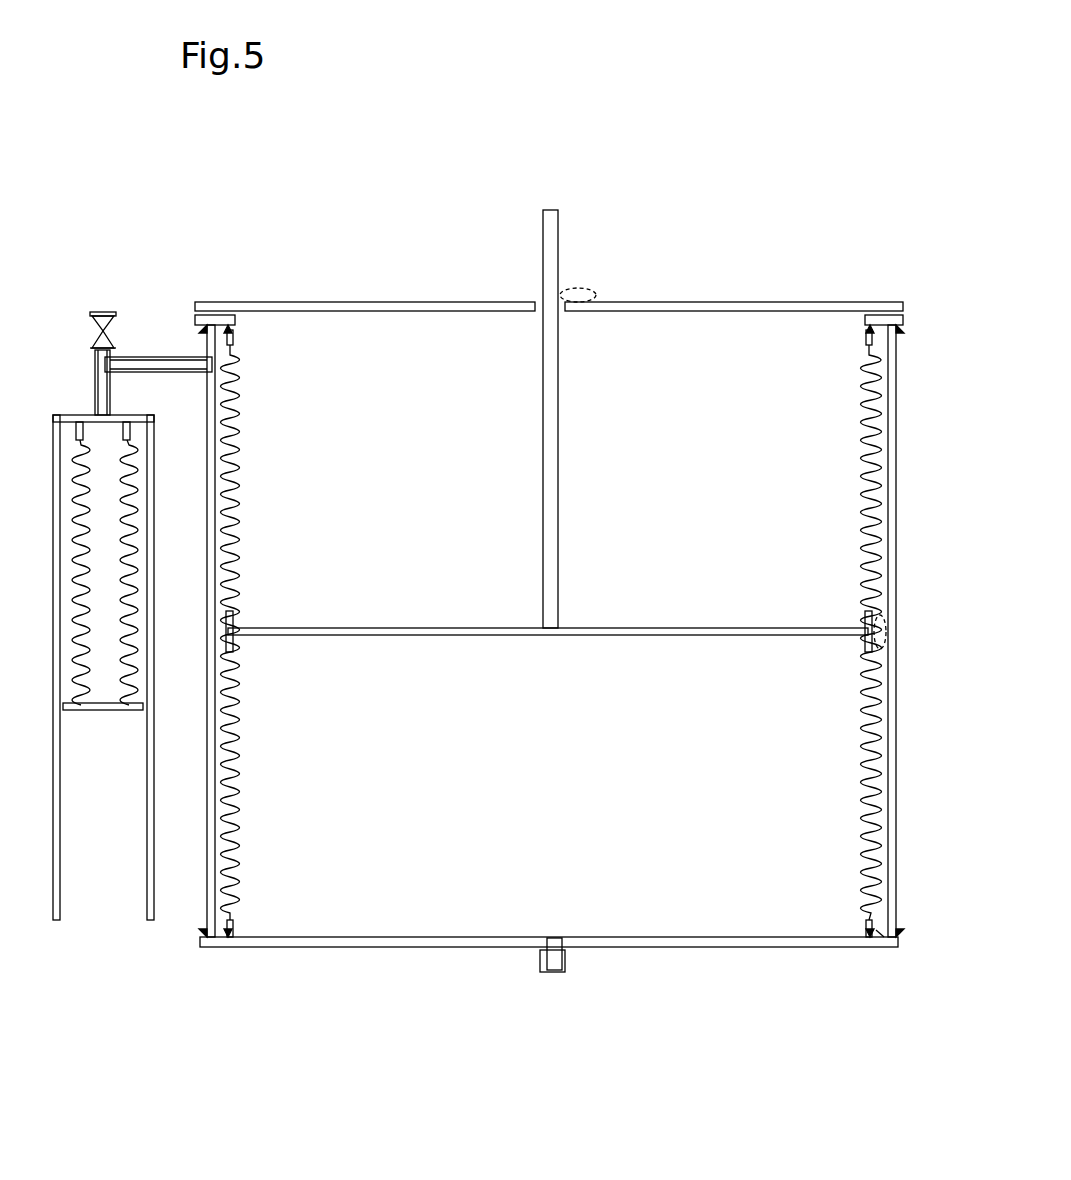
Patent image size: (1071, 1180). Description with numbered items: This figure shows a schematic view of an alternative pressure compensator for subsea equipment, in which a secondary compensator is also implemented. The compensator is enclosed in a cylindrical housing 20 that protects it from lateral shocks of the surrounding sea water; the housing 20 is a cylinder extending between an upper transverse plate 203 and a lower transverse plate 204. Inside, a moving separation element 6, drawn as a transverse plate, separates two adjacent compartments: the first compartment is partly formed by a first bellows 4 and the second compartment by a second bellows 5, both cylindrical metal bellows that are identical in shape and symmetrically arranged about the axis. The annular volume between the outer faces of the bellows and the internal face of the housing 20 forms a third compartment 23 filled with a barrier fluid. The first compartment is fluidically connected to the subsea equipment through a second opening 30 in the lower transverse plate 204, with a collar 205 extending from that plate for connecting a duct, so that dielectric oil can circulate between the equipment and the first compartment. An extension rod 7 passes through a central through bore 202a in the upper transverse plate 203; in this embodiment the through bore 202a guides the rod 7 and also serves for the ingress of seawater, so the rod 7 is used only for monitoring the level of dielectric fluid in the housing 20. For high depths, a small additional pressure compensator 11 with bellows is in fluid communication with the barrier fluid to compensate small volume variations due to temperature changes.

The first bellows 4 is at (215, 930).
The second bellows 5 is at (884, 440).
The moving separation element 6 is at (718, 636).
The extension rod 7 is at (556, 240).
The additional pressure compensator 11 is at (42, 425).
The housing 20 is at (898, 772).
The third compartment 23 is at (880, 940).
The second opening 30 is at (563, 933).
The central through bore 202a is at (588, 291).
The upper transverse plate 203 is at (708, 302).
The lower transverse plate 204 is at (725, 948).
The collar 205 is at (566, 965).